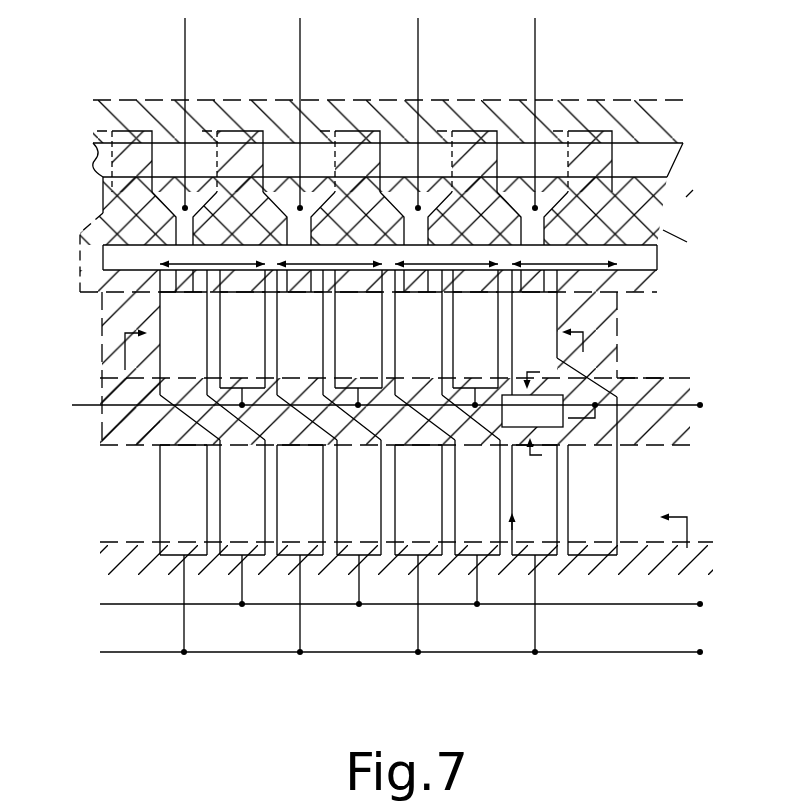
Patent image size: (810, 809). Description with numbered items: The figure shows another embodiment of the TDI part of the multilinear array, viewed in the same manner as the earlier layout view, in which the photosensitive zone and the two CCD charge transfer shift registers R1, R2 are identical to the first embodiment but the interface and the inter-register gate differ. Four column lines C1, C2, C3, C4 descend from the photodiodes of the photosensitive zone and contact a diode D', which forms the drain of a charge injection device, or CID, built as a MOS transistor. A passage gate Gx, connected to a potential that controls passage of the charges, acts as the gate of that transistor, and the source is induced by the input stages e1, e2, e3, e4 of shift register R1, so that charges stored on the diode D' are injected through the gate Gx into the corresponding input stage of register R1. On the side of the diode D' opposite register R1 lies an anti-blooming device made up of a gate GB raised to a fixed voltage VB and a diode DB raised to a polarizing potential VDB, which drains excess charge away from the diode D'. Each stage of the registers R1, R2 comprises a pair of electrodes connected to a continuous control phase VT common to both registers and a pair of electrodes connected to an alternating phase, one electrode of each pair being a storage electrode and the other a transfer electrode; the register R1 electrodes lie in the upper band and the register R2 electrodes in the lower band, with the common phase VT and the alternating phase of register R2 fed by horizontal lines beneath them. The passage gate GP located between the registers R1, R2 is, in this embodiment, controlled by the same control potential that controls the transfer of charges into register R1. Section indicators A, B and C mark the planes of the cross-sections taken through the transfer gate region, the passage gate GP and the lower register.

The column line C1 is at (200, 109).
The column line C2 is at (315, 109).
The column line C3 is at (433, 109).
The column line C4 is at (550, 109).
The diode DB is at (648, 112).
The polarizing potential VDB is at (653, 126).
The fixed voltage VB is at (640, 160).
The gate GB is at (106, 162).
The diode D' is at (386, 234).
The stage e1 is at (212, 257).
The stage e2 is at (329, 257).
The stage e3 is at (446, 257).
The stage e4 is at (564, 257).
The passage gate Gx is at (627, 268).
The charge transfer shift register R1 is at (337, 355).
The charge transfer shift register R2 is at (341, 524).
The passage gate GP is at (566, 425).
The continuous control phase VT is at (418, 607).
The section A- A is at (362, 354).
The section B- B is at (536, 417).
The section C- C is at (605, 530).